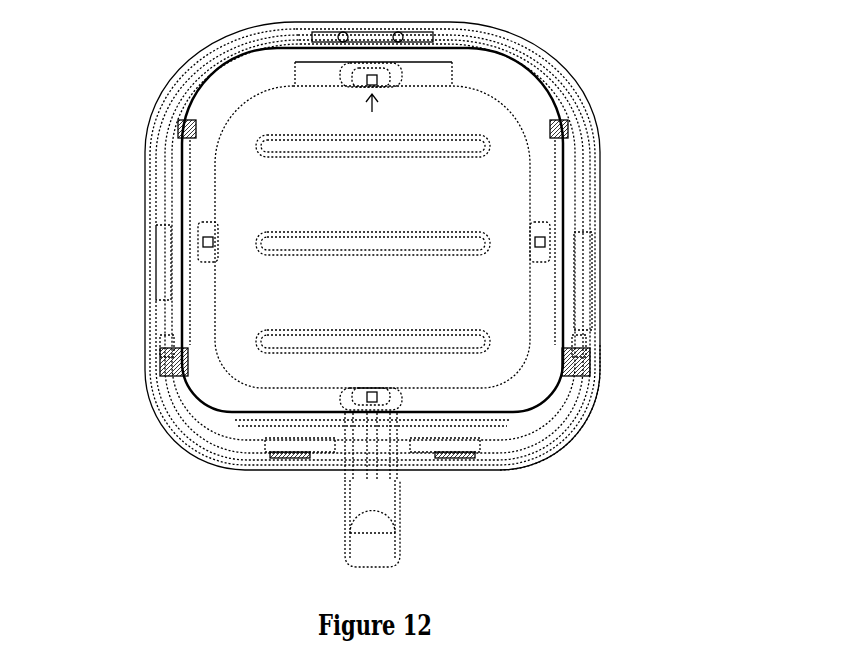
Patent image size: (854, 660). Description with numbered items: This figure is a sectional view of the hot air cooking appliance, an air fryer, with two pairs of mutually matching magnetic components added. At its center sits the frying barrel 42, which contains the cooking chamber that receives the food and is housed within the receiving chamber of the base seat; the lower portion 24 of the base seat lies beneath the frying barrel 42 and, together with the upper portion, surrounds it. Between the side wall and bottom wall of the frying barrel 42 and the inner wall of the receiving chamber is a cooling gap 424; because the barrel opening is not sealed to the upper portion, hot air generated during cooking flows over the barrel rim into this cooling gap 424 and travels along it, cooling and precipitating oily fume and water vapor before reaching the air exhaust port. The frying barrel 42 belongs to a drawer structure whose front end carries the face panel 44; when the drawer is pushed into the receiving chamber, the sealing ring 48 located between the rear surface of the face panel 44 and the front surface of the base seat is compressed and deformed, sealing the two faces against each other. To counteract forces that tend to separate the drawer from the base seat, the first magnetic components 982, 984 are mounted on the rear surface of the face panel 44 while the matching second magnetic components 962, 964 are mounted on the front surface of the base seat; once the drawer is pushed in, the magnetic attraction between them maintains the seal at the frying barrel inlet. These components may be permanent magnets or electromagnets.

The lower portion 24 is at (570, 203).
The frying barrel 42 is at (570, 170).
The cooling gap 424 is at (567, 137).
The face panel 44 is at (570, 427).
The sealing ring 48 is at (593, 380).
The second magnetic component 962 is at (587, 352).
The first magnetic component 982 is at (593, 367).
The second magnetic component 964 is at (158, 357).
The first magnetic component 984 is at (150, 373).